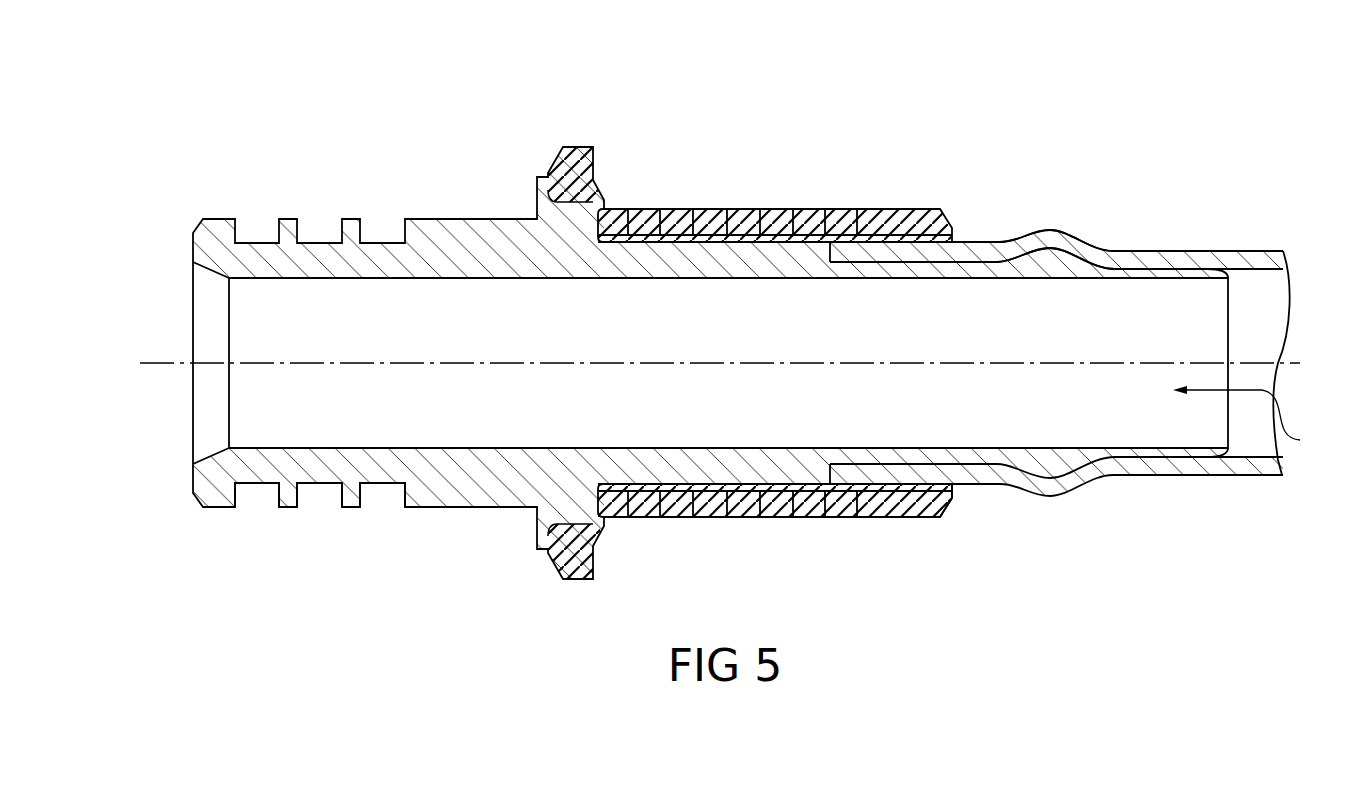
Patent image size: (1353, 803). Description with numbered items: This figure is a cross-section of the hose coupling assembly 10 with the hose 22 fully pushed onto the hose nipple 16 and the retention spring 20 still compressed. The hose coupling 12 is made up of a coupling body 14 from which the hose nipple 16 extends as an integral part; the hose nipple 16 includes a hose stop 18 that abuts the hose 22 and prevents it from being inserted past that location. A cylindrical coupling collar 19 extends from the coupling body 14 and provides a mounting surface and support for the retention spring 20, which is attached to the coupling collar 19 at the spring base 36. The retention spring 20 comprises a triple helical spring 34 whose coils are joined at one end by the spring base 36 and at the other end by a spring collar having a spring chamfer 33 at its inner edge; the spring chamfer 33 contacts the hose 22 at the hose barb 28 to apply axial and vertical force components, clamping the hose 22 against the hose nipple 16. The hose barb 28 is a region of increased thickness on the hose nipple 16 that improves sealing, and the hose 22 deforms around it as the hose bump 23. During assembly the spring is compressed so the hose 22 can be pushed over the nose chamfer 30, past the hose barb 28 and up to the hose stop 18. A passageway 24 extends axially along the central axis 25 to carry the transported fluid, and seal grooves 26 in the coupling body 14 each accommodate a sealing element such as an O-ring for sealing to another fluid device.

The hose coupling assembly 10 is at (773, 121).
The hose coupling 12 is at (434, 206).
The coupling body 14 is at (440, 493).
The hose nipple 16 is at (1003, 453).
The hose stop 18 is at (828, 255).
The coupling collar 19 is at (578, 220).
The retention spring 20 is at (848, 193).
The hose 22 is at (1233, 258).
The hose bump 23 is at (1060, 236).
The passageway 24 is at (1250, 419).
The central axis 25 is at (168, 363).
The seal grooves 26 is at (378, 520).
The hose barb 28 is at (1060, 260).
The nose chamfer 30 is at (1182, 272).
The spring chamfer 33 is at (950, 485).
The triple helical spring 34 is at (808, 502).
The spring base 36 is at (565, 560).